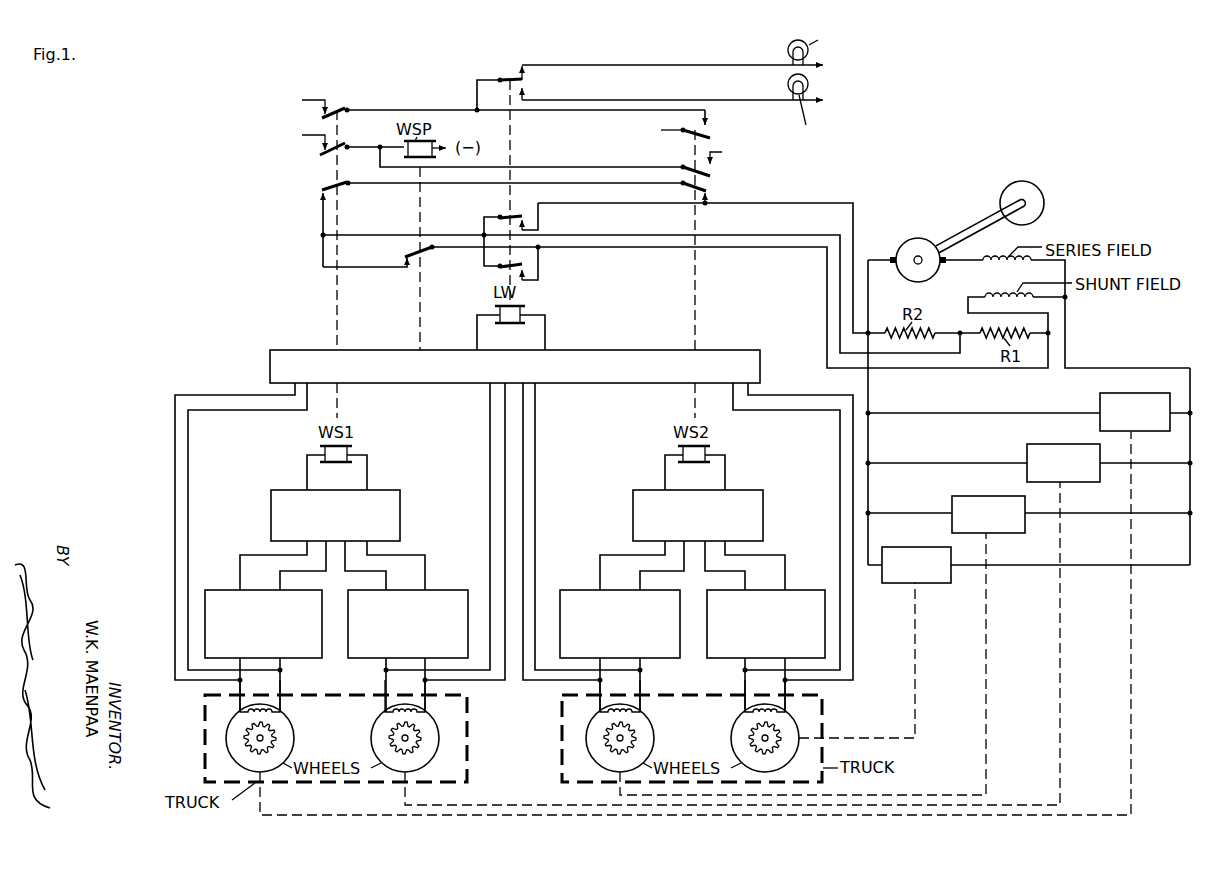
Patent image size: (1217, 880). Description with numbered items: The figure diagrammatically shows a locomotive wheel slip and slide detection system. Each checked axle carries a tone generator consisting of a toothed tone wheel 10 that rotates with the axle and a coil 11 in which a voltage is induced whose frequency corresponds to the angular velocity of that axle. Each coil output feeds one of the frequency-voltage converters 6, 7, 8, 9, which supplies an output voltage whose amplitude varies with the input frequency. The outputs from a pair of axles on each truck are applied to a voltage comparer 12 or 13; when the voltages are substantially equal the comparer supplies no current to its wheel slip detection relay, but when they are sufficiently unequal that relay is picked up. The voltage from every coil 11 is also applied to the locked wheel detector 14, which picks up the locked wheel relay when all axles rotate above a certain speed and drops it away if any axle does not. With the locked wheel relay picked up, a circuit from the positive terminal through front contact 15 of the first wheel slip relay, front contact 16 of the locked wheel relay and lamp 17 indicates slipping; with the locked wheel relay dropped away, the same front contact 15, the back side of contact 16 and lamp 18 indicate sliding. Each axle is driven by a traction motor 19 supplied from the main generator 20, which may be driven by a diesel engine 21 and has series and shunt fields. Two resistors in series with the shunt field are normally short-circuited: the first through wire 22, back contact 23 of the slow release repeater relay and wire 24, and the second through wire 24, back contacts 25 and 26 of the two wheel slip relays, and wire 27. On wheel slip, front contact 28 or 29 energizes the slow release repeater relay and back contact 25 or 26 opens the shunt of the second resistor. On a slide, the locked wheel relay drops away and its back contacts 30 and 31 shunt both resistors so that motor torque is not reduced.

The frequency-voltage converter 6 is at (228, 590).
The frequency-voltage converter 7 is at (433, 590).
The frequency-voltage converter 8 is at (575, 589).
The frequency-voltage converter 9 is at (789, 589).
The toothed tone wheel 10 is at (276, 738).
The coil 11 is at (277, 716).
The voltage comparer 12 is at (401, 523).
The voltage comparer 13 is at (764, 521).
The locked wheel detector 14 is at (575, 384).
The front contact of relay WS1 15 is at (340, 111).
The contact of relay LW 16 is at (502, 77).
The lamp 17 is at (788, 43).
The lamp 18 is at (788, 83).
The traction motor 19 is at (1140, 433).
The main generator 20 is at (915, 238).
The diesel engine 21 is at (1021, 181).
The wire 22 is at (968, 369).
The back contact of relay WSP 23 is at (412, 257).
The wire 24 is at (777, 230).
The back contact of relay WS1 25 is at (347, 187).
The back contact of relay WS2 26 is at (707, 187).
The wire 27 is at (853, 243).
The front contact of relay WS1 28 is at (352, 137).
The front contact of relay WS2 29 is at (692, 168).
The back contact of relay LW 30 is at (503, 215).
The back contact of relay LW 31 is at (498, 268).